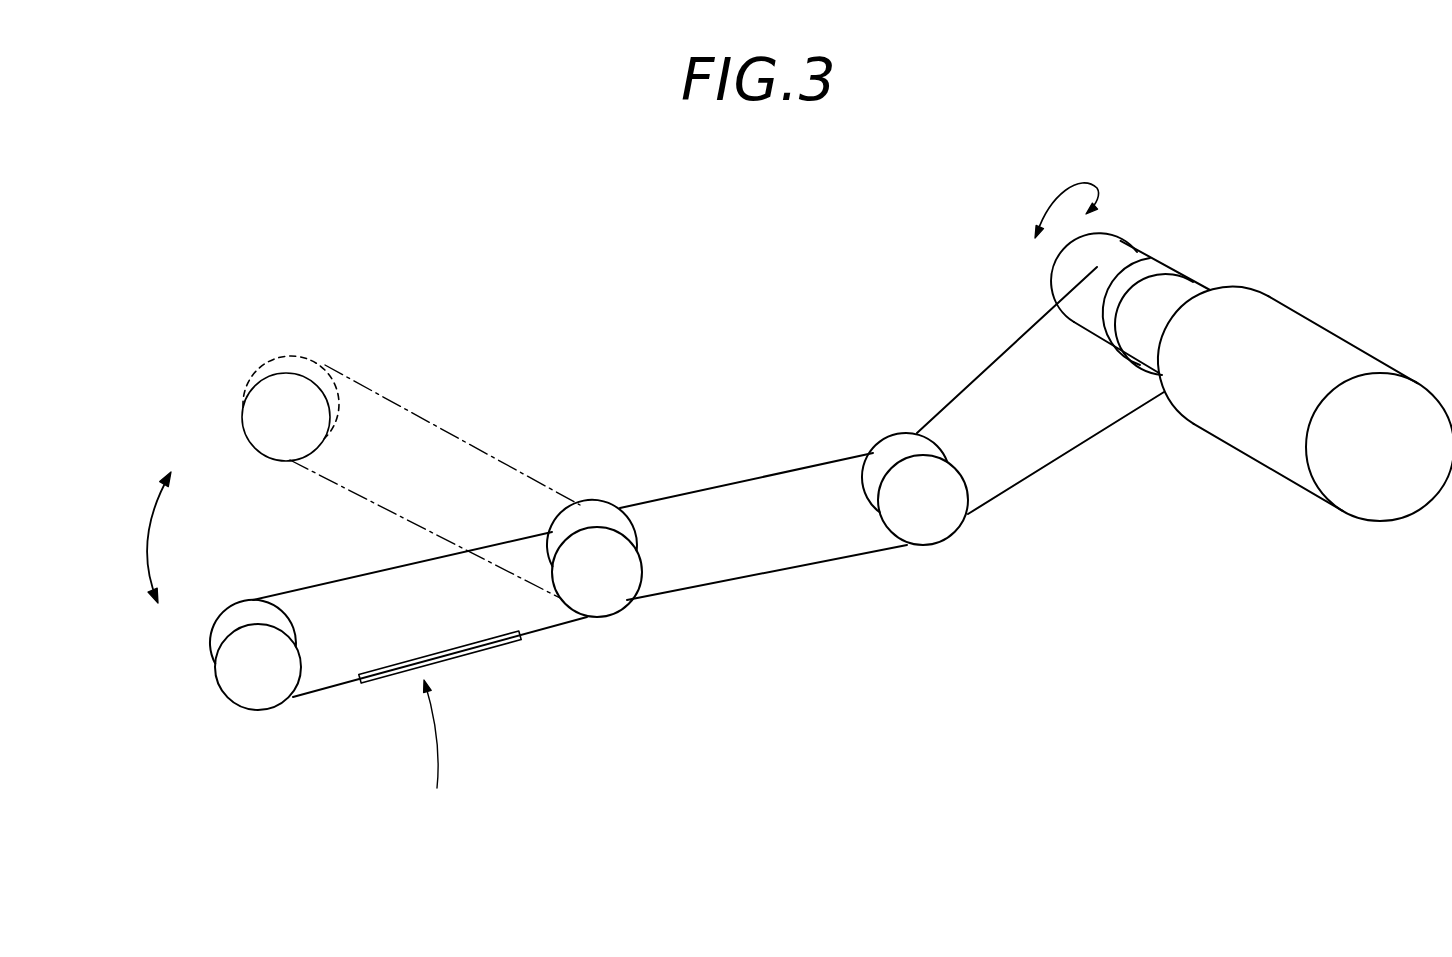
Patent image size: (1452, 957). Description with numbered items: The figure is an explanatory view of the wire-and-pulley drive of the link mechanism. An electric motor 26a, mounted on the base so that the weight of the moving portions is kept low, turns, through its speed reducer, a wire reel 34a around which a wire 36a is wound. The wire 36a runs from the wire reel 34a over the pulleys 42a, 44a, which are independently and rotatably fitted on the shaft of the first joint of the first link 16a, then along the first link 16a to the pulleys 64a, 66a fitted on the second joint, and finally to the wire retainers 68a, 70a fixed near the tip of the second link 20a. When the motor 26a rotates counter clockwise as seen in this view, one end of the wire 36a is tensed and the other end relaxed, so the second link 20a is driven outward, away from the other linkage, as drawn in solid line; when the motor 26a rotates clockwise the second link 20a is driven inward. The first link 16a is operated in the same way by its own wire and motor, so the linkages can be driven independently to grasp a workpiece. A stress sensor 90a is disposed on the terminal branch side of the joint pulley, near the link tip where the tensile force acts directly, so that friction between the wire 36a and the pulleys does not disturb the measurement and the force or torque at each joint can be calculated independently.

The first link 16a is at (813, 580).
The second link 20a is at (435, 755).
The electric motor 26a is at (1280, 482).
The wire reel 34a is at (1052, 266).
The wire 36a is at (1033, 472).
The pulley 42a is at (953, 538).
The pulley 44a is at (880, 442).
The pulley 64a is at (618, 615).
The pulley 66a is at (608, 502).
The wire retainer 68a is at (248, 712).
The wire retainer 70a is at (268, 457).
The stress sensor 90a is at (498, 653).